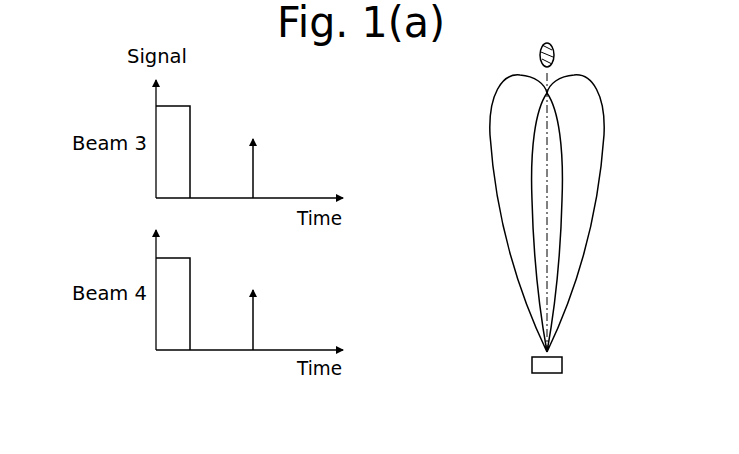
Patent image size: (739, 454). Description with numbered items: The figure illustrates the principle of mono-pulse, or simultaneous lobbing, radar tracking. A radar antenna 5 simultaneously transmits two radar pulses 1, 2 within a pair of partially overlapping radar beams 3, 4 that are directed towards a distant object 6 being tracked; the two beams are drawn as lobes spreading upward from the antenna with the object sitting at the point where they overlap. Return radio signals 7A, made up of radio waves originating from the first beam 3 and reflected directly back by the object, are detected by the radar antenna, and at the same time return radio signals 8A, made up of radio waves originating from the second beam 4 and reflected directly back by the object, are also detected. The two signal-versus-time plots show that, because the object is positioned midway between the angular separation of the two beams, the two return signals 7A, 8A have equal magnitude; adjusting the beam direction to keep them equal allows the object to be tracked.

The radar pulse 1 is at (188, 115).
The radar pulse 2 is at (178, 269).
The first partially overlapping radar beam 3 is at (490, 117).
The second partially overlapping radar beam 4 is at (604, 117).
The radar antenna 5 is at (532, 365).
The distant object 6 is at (555, 50).
The return radio signals 7A is at (257, 152).
The return radio signals 8A is at (257, 305).